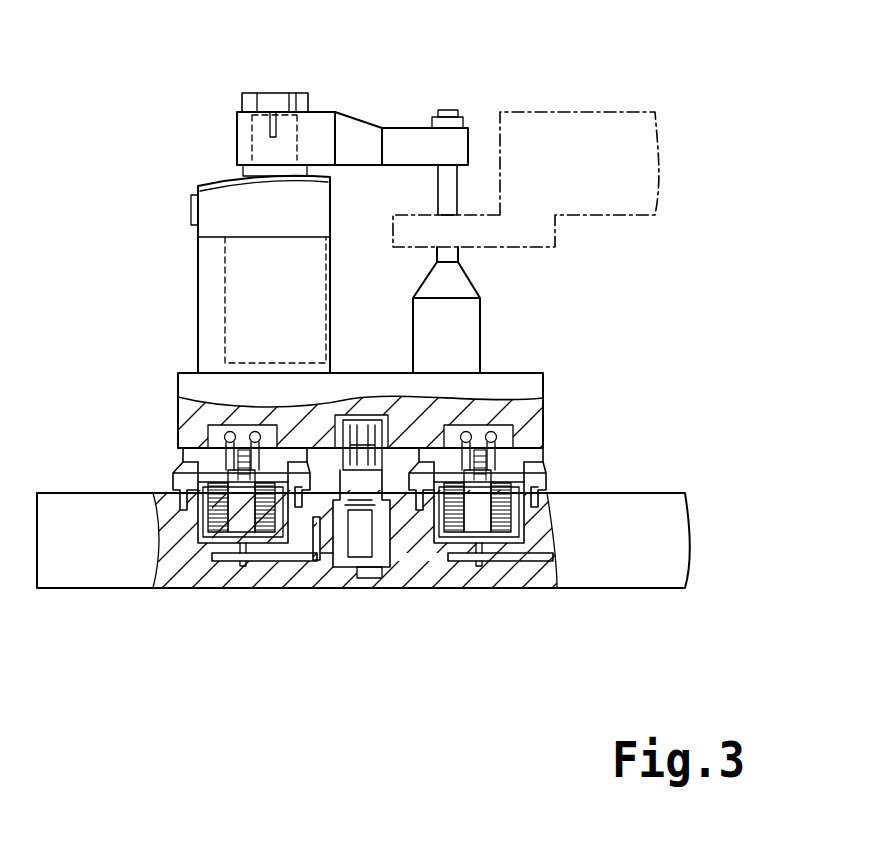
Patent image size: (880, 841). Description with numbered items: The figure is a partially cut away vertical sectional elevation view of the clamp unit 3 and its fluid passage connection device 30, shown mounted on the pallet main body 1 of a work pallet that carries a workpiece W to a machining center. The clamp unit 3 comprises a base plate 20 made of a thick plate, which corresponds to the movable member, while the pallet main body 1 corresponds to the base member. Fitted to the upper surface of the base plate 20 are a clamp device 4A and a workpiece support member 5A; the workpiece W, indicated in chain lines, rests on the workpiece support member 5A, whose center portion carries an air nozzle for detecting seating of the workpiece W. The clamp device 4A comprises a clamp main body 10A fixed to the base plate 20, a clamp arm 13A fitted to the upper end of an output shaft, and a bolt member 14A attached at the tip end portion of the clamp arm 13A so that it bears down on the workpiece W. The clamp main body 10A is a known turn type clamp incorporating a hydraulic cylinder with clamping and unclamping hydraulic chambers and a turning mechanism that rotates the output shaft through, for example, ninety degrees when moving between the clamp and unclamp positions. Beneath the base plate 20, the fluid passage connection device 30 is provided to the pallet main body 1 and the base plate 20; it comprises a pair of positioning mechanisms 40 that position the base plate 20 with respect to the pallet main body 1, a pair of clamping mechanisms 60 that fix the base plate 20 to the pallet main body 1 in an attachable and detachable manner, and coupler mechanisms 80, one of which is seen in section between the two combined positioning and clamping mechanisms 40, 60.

The pallet main body 1 is at (656, 493).
The workpiece W is at (602, 112).
The clamp unit 3 is at (337, 544).
The base plate 20 is at (543, 374).
The fluid passage connection device 30 is at (350, 571).
The positioning mechanism 40 is at (197, 551).
The clamping mechanism 60 is at (439, 550).
The coupler mechanism 80 is at (378, 686).
The clamp device 4A is at (314, 210).
The clamp main body 10A is at (232, 290).
The clamp arm 13A is at (403, 128).
The bolt member 14A is at (437, 192).
The workpiece support member 5A is at (480, 300).